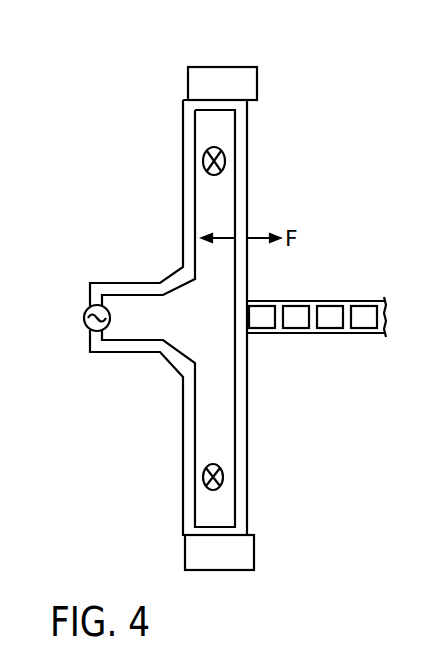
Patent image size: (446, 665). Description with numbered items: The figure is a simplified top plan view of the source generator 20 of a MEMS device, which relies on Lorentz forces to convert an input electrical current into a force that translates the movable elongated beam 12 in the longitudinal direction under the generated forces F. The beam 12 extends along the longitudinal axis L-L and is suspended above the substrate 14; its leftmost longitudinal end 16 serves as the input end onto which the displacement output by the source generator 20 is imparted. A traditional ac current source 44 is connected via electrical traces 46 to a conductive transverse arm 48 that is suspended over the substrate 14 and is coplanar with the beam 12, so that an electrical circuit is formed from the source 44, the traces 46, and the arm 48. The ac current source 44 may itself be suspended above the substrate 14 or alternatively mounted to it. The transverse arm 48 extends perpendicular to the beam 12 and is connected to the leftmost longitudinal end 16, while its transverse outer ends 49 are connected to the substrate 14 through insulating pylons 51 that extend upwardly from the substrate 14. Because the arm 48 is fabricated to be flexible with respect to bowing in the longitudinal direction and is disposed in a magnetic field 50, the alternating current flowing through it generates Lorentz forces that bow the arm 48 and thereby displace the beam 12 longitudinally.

The movable elongated beam 12 is at (353, 335).
The substrate 14 is at (298, 602).
The leftmost longitudinal end 16 is at (245, 316).
The source generator 20 is at (160, 84).
The ac current source 44 is at (88, 308).
The electrical traces 46 is at (182, 145).
The conductive transverse arm 48 is at (247, 135).
The transverse outer ends 49 is at (240, 56).
The magnetic field 50 is at (217, 175).
The insulating pylons 51 is at (223, 78).